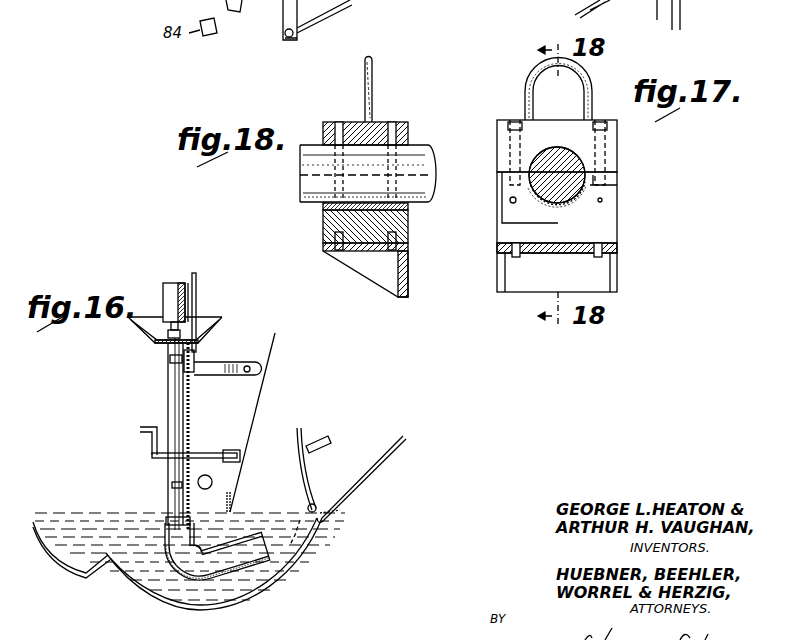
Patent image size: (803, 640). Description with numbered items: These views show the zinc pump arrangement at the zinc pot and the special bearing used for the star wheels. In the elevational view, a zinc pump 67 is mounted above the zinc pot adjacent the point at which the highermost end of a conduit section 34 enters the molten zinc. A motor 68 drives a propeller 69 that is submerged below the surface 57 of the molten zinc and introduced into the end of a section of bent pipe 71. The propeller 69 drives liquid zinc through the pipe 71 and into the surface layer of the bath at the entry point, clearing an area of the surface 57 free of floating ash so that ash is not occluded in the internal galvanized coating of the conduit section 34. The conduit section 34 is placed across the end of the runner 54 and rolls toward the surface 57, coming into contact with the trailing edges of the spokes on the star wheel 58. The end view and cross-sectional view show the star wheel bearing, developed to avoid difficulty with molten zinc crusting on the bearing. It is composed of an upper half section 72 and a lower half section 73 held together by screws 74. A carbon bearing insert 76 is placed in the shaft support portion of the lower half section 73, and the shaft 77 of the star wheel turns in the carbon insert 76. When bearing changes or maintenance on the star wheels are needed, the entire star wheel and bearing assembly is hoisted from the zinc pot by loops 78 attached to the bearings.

In FIG. 18, the loops 78 is at (365, 84).
In FIG. 17, the loops 78 is at (527, 91).
In FIG. 18, the screws 74 is at (337, 120).
In FIG. 17, the screws 74 is at (510, 150).
In FIG. 18, the upper half section 72 is at (408, 130).
In FIG. 17, the upper half section 72 is at (617, 158).
In FIG. 18, the shaft 77 is at (306, 174).
In FIG. 17, the shaft 77 is at (566, 200).
In FIG. 16, the shaft 77 is at (205, 489).
In FIG. 18, the carbon bearing insert 76 is at (410, 206).
In FIG. 17, the carbon bearing insert 76 is at (585, 192).
In FIG. 18, the lower half section 73 is at (324, 229).
In FIG. 17, the lower half section 73 is at (617, 225).
In FIG. 16, the motor 68 is at (170, 282).
In FIG. 16, the zinc pump 67 is at (167, 393).
In FIG. 16, the propeller 69 is at (167, 516).
In FIG. 16, the surface of the molten zinc 57 is at (255, 512).
In FIG. 16, the star wheel 58 is at (310, 481).
In FIG. 16, the conduit section 34 is at (316, 505).
In FIG. 16, the runner 54 is at (280, 575).
In FIG. 16, the bent pipe 71 is at (212, 579).